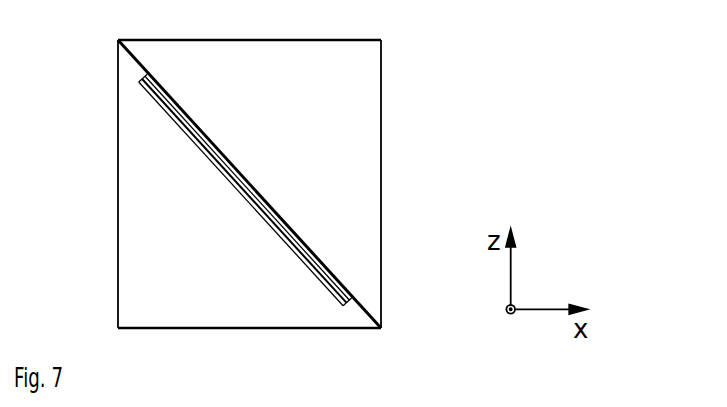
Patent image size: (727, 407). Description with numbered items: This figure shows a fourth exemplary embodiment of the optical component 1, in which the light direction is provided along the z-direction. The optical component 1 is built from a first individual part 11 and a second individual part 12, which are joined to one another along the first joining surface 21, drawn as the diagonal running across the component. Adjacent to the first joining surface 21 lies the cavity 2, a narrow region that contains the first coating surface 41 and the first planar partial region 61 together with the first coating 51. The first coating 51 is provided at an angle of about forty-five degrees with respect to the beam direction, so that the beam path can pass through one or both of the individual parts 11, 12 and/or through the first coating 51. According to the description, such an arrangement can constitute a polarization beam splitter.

The optical component 1 is at (297, 164).
The first individual part 11 is at (274, 339).
The second individual part 12 is at (420, 184).
The first joining surface 21 is at (134, 58).
The cavity 2 is at (216, 185).
The first coating surface 41 is at (256, 182).
The first coating 51 is at (244, 191).
The first planar partial region 61 is at (182, 104).